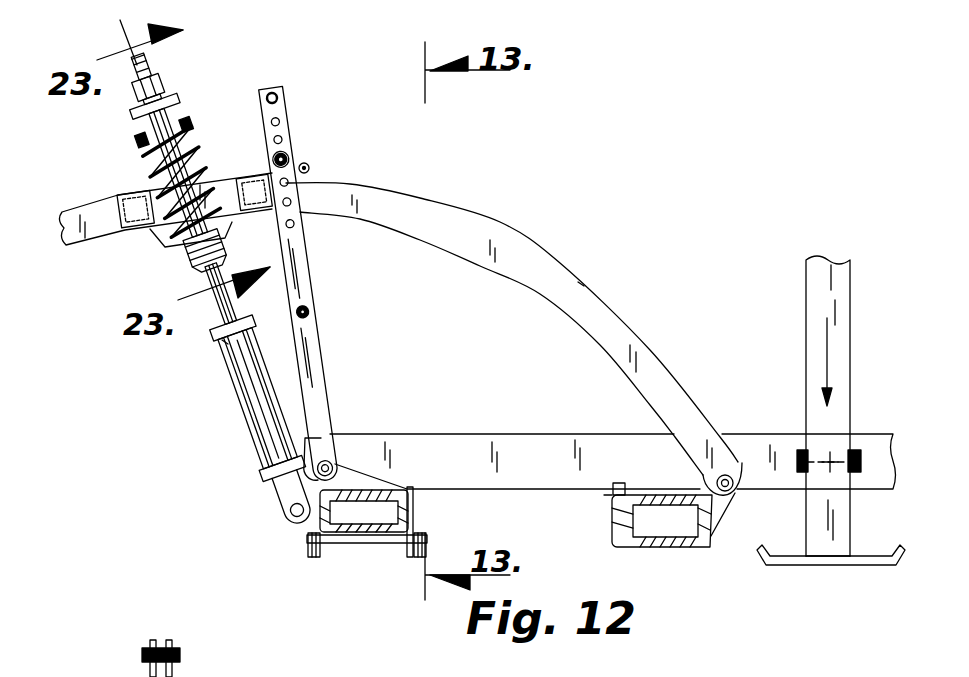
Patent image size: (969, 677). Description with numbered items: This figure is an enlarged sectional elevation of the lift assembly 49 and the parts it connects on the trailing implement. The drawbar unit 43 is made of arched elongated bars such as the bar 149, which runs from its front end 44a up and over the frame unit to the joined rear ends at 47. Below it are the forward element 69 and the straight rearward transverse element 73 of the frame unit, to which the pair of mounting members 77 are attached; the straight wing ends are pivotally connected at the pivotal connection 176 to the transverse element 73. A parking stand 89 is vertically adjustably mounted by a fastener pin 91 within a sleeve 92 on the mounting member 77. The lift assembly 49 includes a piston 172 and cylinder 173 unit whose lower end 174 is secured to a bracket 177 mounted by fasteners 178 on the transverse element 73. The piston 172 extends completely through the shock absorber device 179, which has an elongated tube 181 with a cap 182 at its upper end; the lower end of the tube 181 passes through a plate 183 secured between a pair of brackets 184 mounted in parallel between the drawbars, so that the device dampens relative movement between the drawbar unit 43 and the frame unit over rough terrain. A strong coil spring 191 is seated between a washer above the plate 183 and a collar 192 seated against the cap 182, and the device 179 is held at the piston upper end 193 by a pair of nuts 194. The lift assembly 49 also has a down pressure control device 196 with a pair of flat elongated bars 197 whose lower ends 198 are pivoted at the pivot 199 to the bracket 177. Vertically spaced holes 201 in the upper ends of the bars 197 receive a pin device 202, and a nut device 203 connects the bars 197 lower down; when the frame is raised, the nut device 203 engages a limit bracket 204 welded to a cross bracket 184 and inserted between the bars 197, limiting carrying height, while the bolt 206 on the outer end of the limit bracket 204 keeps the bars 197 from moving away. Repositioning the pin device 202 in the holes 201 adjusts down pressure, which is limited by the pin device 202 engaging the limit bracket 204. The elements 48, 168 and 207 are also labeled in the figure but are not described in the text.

The drawbar unit 43 is at (550, 226).
The front end of drawbar 44a is at (736, 500).
The joined rear ends of drawbars 47 is at (72, 213).
The frame portion 48 is at (765, 616).
The lift assembly 49 is at (205, 382).
The forward element 69 is at (660, 540).
The rearward transverse element 73 is at (415, 518).
The mounting member 77 is at (517, 444).
The parking stand 89 is at (818, 306).
The fastener pin 91 is at (790, 450).
The sleeve 92 is at (861, 450).
The elongated bar 149 is at (581, 284).
The skid plate 168 is at (831, 611).
The piston 172 is at (247, 369).
The cylinder 173 is at (257, 398).
The lower end of piston and cylinder unit 174 is at (292, 498).
The pivotal connection 176 is at (297, 510).
The bracket 177 is at (308, 535).
The fasteners 178 is at (343, 552).
The shock absorber device 179 is at (178, 172).
The elongated tube 181 is at (181, 181).
The cap 182 is at (141, 66).
The plate 183 is at (206, 252).
The brackets 184 is at (118, 196).
The coil spring 191 is at (163, 132).
The collar 192 is at (154, 104).
The piston upper end 193 is at (138, 57).
The nuts 194 is at (148, 87).
The down pressure control device 196 is at (298, 92).
The flat elongated bars 197 is at (326, 366).
The lower ends of bars 198 is at (326, 446).
The pivot 199 is at (337, 466).
The holes 201 is at (291, 206).
The pin device 202 is at (295, 158).
The nut device 203 is at (312, 312).
The limit bracket 204 is at (306, 162).
The bolt 206 is at (312, 168).
The bracket 207 is at (183, 676).